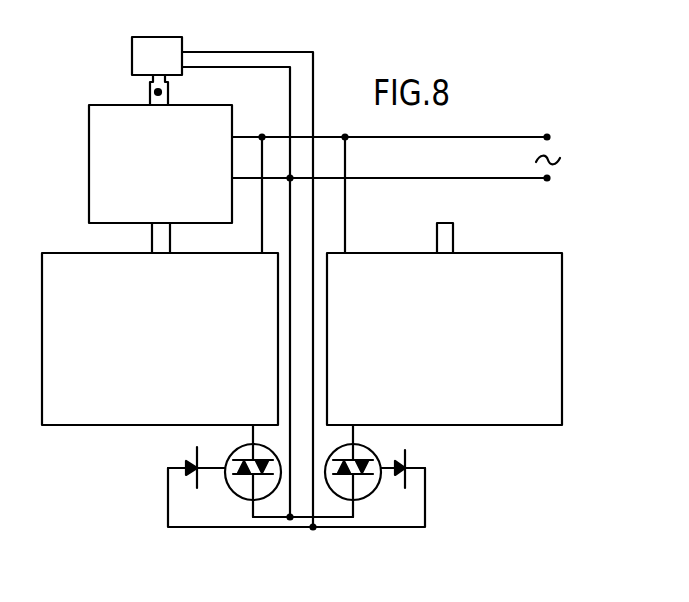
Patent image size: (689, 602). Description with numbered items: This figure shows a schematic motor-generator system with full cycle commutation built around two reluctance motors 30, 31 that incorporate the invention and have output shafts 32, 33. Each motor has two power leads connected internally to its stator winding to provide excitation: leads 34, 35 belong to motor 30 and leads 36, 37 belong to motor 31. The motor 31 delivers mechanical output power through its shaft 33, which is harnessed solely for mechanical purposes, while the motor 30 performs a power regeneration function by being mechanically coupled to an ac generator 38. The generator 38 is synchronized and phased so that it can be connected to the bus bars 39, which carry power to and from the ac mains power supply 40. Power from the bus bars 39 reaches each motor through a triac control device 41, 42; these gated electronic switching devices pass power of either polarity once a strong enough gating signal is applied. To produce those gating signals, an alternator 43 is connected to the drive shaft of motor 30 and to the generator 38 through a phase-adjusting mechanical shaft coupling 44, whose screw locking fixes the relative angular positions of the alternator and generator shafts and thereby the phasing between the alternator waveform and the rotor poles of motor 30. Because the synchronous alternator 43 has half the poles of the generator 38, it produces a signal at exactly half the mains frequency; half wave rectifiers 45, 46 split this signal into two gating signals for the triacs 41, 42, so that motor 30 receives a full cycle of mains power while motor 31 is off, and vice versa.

The reluctance motor 30 is at (176, 344).
The reluctance motor 31 is at (447, 342).
The output shaft 32 is at (158, 238).
The output shaft 33 is at (443, 237).
The power lead 34 is at (265, 220).
The power lead 35 is at (250, 433).
The power lead 36 is at (348, 232).
The power lead 37 is at (357, 440).
The ac generator 38 is at (180, 185).
The bus bars 39 is at (482, 137).
The ac mains power supply 40 is at (568, 157).
The triac control device 41 is at (230, 495).
The triac control device 42 is at (370, 498).
The alternator 43 is at (147, 55).
The phase-adjusting mechanical shaft coupling 44 is at (147, 93).
The half wave rectifier 45 is at (190, 478).
The half wave rectifier 46 is at (412, 480).